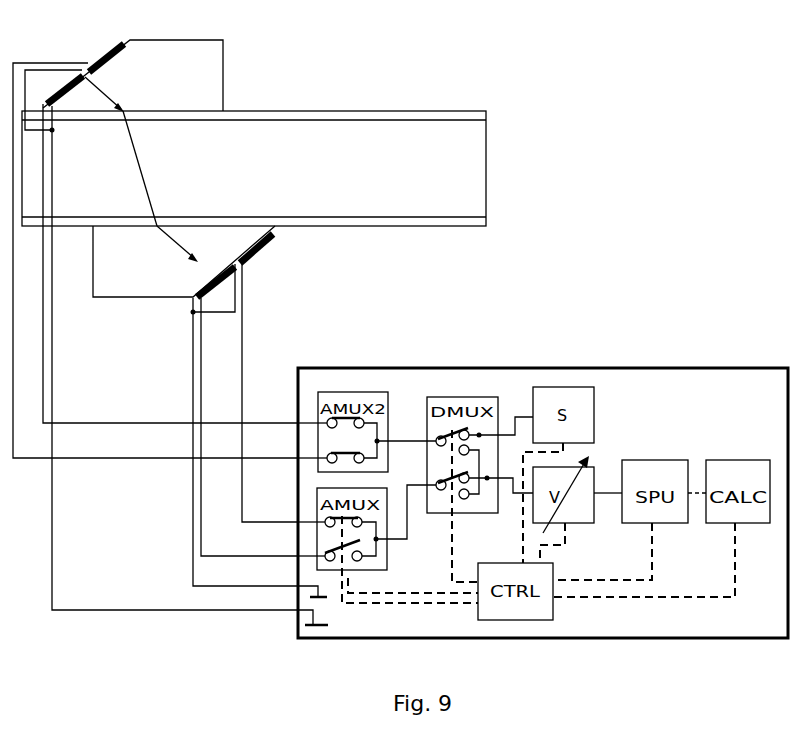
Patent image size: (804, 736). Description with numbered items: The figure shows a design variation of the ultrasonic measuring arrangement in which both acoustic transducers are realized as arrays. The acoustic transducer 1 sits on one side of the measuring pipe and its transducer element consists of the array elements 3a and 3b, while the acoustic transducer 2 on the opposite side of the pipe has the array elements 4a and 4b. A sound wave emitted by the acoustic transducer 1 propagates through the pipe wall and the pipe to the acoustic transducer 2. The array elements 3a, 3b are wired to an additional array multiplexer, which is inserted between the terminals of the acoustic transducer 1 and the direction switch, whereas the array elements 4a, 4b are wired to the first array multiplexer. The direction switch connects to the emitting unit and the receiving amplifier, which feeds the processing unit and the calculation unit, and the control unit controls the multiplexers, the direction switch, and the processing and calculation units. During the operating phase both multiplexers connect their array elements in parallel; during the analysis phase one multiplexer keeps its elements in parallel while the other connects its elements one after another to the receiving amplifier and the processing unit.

The acoustic transducer 1 is at (133, 75).
The acoustic transducer 2 is at (184, 261).
The array element 3a is at (57, 90).
The array element 3b is at (100, 52).
The array element 4a is at (265, 253).
The array element 4b is at (228, 286).